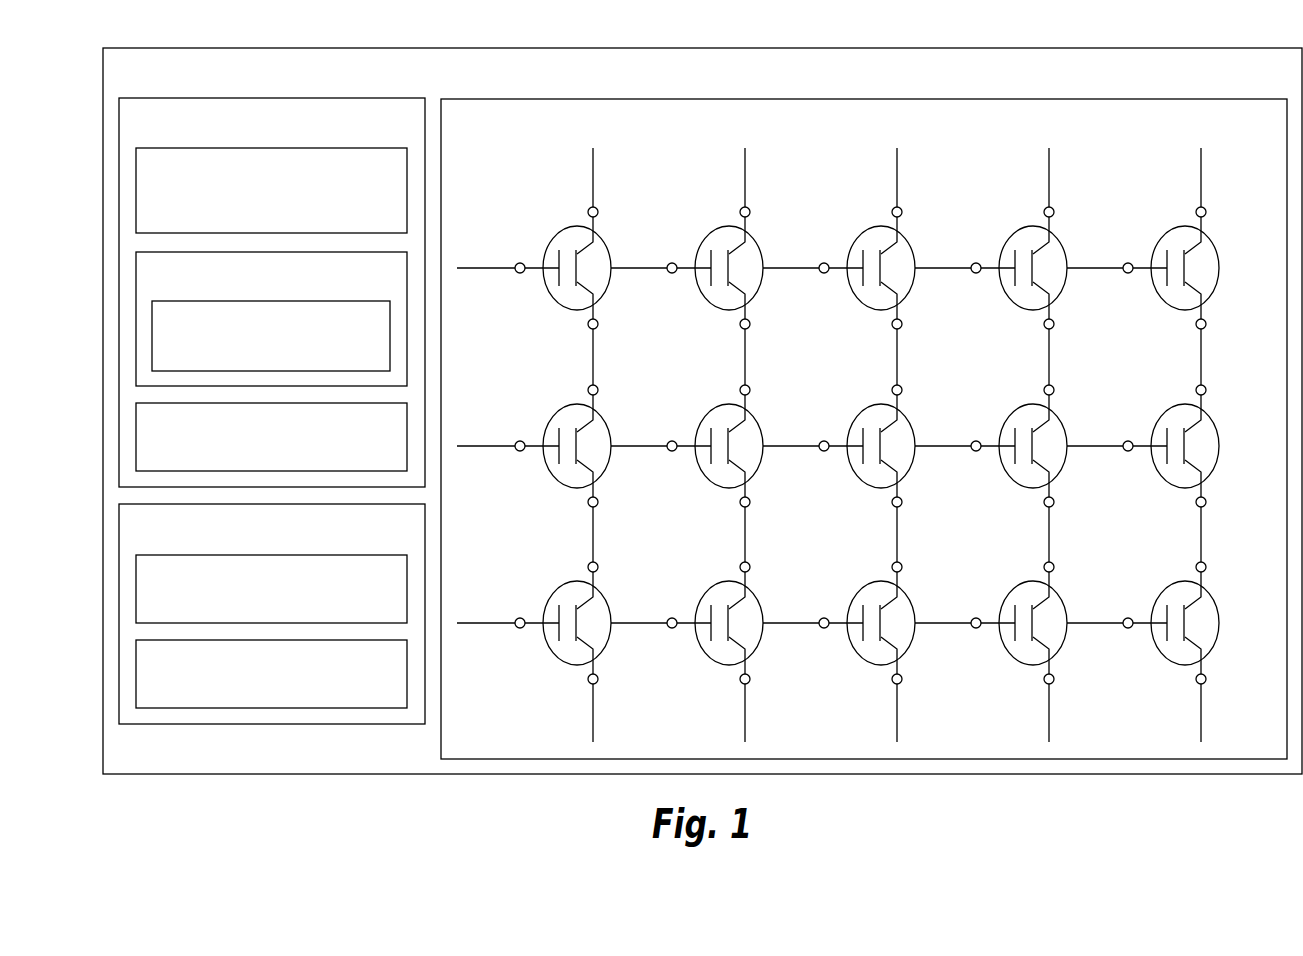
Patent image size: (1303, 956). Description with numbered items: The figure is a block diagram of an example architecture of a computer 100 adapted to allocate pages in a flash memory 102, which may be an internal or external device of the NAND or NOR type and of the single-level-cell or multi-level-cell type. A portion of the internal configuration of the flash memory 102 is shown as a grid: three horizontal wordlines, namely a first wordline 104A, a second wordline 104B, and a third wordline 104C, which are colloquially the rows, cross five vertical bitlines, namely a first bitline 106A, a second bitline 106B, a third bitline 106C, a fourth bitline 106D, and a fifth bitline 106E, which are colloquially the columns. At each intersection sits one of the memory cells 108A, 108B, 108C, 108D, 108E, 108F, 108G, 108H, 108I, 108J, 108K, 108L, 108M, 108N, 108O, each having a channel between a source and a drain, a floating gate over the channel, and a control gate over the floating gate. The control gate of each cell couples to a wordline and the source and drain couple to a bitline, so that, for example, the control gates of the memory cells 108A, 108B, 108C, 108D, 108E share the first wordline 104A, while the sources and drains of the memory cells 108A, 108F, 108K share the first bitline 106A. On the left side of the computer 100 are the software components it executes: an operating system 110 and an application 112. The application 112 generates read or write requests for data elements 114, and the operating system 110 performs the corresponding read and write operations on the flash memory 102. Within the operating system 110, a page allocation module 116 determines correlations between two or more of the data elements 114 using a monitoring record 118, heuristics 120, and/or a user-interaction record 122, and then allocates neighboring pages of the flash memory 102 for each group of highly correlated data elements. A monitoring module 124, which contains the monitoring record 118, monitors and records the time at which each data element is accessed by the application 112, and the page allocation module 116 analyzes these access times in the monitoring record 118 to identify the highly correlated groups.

The computer 100 is at (702, 411).
The flash memory 102 is at (958, 125).
The operating system 110 is at (272, 292).
The application 112 is at (272, 614).
The data elements 114 is at (368, 600).
The page allocation module 116 is at (332, 215).
The monitoring record 118 is at (332, 358).
The heuristics 120 is at (348, 447).
The user-interaction record 122 is at (330, 698).
The monitoring module 124 is at (395, 288).
The first wordline 104A is at (467, 278).
The second wordline 104B is at (467, 456).
The third wordline 104C is at (467, 633).
The first bitline 106A is at (584, 155).
The second bitline 106B is at (736, 155).
The third bitline 106C is at (888, 155).
The fourth bitline 106D is at (1040, 155).
The fifth bitline 106E is at (1192, 155).
The memory cell 108A is at (612, 292).
The memory cell 108B is at (764, 292).
The memory cell 108C is at (916, 292).
The memory cell 108D is at (1068, 292).
The memory cell 108E is at (1220, 292).
The memory cell 108F is at (612, 470).
The memory cell 108G is at (764, 470).
The memory cell 108H is at (916, 470).
The memory cell 108I is at (1068, 470).
The memory cell 108J is at (1220, 470).
The memory cell 108K is at (612, 647).
The memory cell 108L is at (764, 647).
The memory cell 108M is at (916, 647).
The memory cell 108N is at (1068, 647).
The memory cell 108O is at (1220, 647).